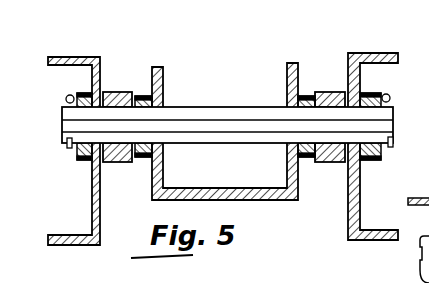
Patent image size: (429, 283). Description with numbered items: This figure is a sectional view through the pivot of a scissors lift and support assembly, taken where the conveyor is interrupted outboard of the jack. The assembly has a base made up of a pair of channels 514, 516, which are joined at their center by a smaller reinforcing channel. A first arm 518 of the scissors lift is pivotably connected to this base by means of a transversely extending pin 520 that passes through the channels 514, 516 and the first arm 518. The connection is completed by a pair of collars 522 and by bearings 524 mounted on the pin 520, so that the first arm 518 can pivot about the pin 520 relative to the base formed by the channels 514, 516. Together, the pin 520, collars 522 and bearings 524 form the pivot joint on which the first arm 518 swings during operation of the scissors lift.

The channel 514 is at (375, 54).
The channel 516 is at (66, 57).
The first arm 518 is at (288, 63).
The pin 520 is at (183, 118).
The collars 522 is at (118, 92).
The bearings 524 is at (342, 160).